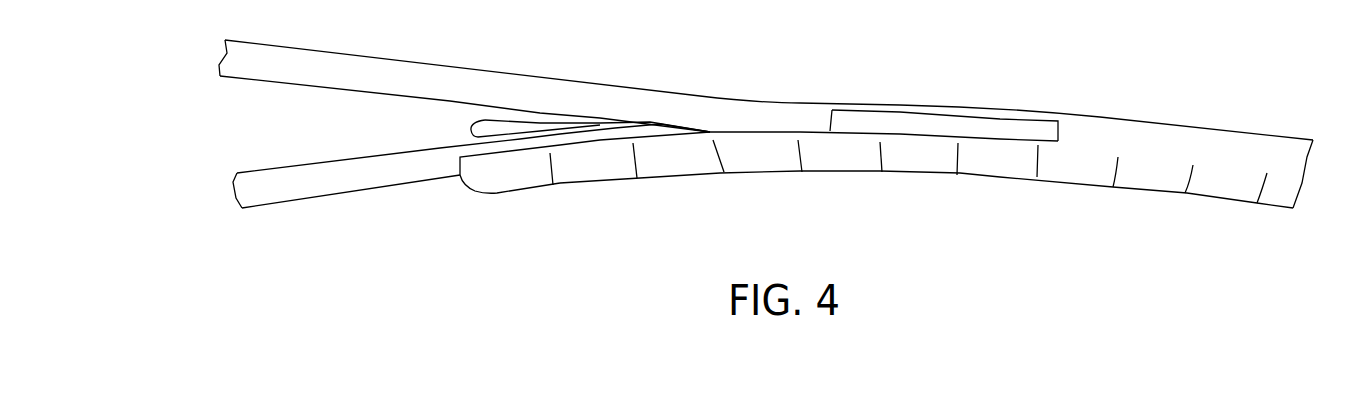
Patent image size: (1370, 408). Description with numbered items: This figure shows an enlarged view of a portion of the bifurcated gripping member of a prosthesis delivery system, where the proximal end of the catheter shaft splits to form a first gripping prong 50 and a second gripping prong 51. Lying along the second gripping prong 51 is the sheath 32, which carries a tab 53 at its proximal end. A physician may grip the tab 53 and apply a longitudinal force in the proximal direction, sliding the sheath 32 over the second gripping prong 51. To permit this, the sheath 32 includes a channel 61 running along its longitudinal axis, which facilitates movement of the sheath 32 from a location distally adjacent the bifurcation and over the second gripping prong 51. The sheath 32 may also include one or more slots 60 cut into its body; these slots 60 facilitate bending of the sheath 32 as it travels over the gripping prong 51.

The first gripping prong 50 is at (413, 73).
The second gripping prong 51 is at (287, 185).
The tab 53 is at (507, 172).
The sheath 32 is at (842, 152).
The channel 61 is at (927, 123).
The slot 60 is at (1034, 156).